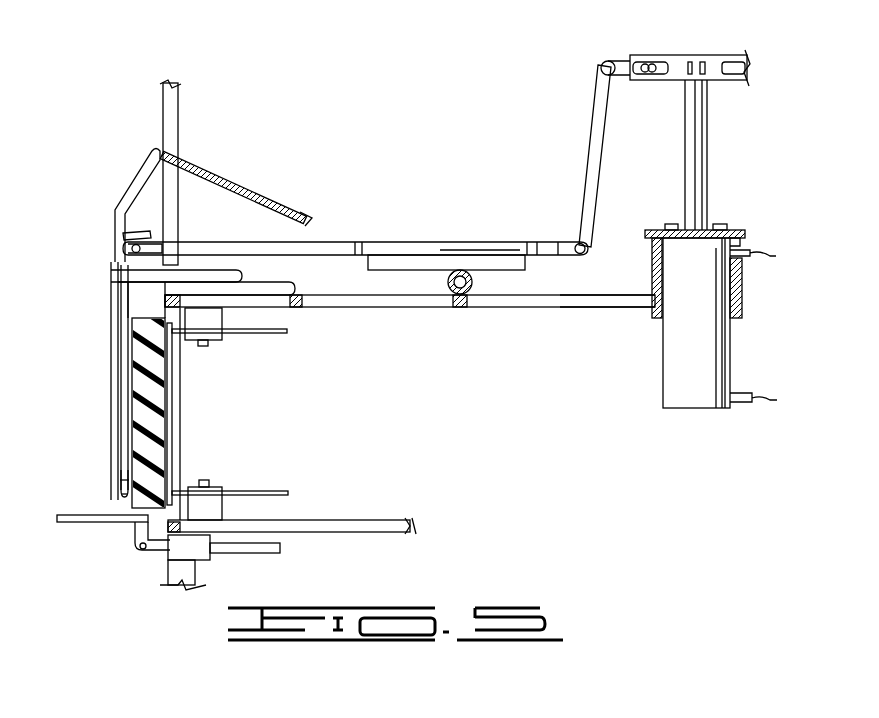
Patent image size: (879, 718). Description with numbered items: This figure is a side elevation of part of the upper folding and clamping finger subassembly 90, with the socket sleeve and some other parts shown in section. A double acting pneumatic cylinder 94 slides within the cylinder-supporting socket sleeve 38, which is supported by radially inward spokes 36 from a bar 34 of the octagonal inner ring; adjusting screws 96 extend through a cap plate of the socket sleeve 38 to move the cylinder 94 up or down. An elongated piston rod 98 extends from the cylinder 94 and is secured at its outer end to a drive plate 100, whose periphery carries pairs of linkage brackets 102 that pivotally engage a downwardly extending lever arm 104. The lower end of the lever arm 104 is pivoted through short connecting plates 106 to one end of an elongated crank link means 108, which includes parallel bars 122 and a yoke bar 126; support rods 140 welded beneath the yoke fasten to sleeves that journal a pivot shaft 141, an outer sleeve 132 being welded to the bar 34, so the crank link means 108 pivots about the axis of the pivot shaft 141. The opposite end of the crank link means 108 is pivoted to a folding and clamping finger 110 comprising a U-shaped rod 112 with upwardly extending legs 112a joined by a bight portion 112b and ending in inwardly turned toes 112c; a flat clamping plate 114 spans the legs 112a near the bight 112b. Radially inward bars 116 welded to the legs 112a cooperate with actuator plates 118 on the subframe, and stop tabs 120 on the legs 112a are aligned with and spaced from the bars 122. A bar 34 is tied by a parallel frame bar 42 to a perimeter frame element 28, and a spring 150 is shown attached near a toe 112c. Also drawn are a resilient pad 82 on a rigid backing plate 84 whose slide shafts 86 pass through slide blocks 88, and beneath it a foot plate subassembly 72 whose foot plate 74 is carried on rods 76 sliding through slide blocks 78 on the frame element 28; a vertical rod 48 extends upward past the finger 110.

The perimeter frame element 28 is at (170, 545).
The bar 34 is at (460, 308).
The spoke 36 is at (573, 308).
The cylinder-supporting socket sleeve 38 is at (653, 316).
The frame bar 42 is at (392, 307).
The vertical rod 48 is at (172, 116).
The tube-supporting foot plate subassembly 72 is at (122, 550).
The foot plate 74 is at (70, 514).
The parallel rod 76 is at (268, 554).
The slide block 78 is at (205, 552).
The resilient pad 82 is at (166, 420).
The rigid backing plate 84 is at (173, 394).
The slide shaft 86 is at (283, 334).
The slide block 88 is at (205, 338).
The upper folding and clamping finger subassembly 90 is at (540, 186).
The pneumatic cylinder 94 is at (706, 316).
The adjusting screw 96 is at (672, 228).
The piston rod 98 is at (700, 148).
The drive plate 100 is at (692, 55).
The linkage bracket 102 is at (612, 60).
The lever arm 104 is at (590, 100).
The connecting plate 106 is at (572, 258).
The crank link means 108 is at (330, 234).
The folding and clamping finger 110 is at (100, 319).
The U-shaped rod 112 is at (120, 418).
The leg 112a is at (118, 470).
The bight portion 112b is at (122, 497).
The toe 112c is at (142, 170).
The clamping plate 114 is at (110, 380).
The bar 116 is at (236, 262).
The actuator plate 118 is at (290, 290).
The stop tab 120 is at (150, 232).
The parallel bar 122 is at (225, 240).
The bar 126 is at (482, 248).
The outer sleeve 132 is at (448, 281).
The support rod 140 is at (392, 262).
The pivot shaft 141 is at (473, 282).
The spring 150 is at (228, 186).